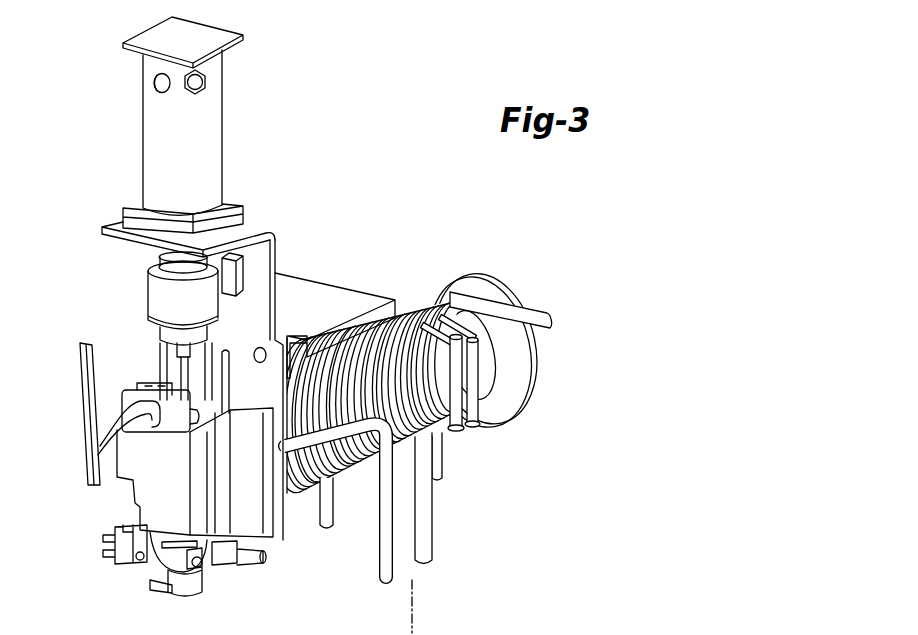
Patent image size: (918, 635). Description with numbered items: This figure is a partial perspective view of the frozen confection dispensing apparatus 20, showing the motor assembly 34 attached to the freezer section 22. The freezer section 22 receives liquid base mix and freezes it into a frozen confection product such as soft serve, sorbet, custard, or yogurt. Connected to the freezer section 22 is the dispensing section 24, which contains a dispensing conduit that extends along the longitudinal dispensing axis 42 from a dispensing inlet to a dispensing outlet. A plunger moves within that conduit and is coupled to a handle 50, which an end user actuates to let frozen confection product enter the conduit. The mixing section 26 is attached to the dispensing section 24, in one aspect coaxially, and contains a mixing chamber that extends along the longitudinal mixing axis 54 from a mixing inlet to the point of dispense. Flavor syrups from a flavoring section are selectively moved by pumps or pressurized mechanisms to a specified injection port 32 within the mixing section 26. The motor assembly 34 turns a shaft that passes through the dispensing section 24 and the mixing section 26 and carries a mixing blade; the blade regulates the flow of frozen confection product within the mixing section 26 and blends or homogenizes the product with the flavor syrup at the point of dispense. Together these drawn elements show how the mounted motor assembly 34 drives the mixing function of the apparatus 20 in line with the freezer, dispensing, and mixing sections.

The frozen confection dispensing apparatus 20 is at (366, 264).
The freezer section 22 is at (528, 376).
The dispensing section 24 is at (255, 513).
The mixing section 26 is at (160, 565).
The injection port 32 is at (107, 562).
The motor assembly 34 is at (259, 186).
The handle 50 is at (75, 371).
The longitudinal dispensing axis 42 is at (457, 606).
The longitudinal mixing axis 54 is at (412, 595).